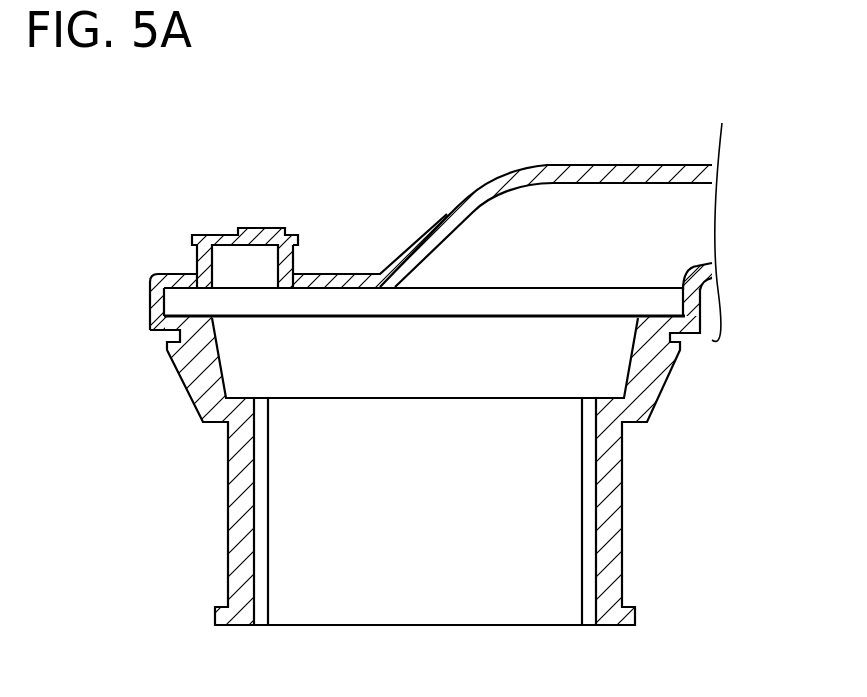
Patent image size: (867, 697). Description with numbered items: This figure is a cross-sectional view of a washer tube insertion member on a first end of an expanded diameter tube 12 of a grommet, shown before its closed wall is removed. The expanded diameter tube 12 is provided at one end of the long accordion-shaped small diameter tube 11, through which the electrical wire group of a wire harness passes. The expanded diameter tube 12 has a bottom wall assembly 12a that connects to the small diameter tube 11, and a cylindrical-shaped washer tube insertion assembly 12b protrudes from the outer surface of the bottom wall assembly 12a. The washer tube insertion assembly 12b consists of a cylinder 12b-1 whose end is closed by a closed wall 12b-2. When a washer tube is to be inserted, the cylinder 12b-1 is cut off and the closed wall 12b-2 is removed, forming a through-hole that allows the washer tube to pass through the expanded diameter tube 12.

The small diameter tube 11 is at (611, 163).
The expanded diameter tube 12 is at (148, 290).
The bottom wall assembly 12a is at (336, 273).
The washer tube insertion assembly 12b is at (169, 208).
The cylinder 12b-1 is at (195, 262).
The closed wall 12b-2 is at (226, 234).